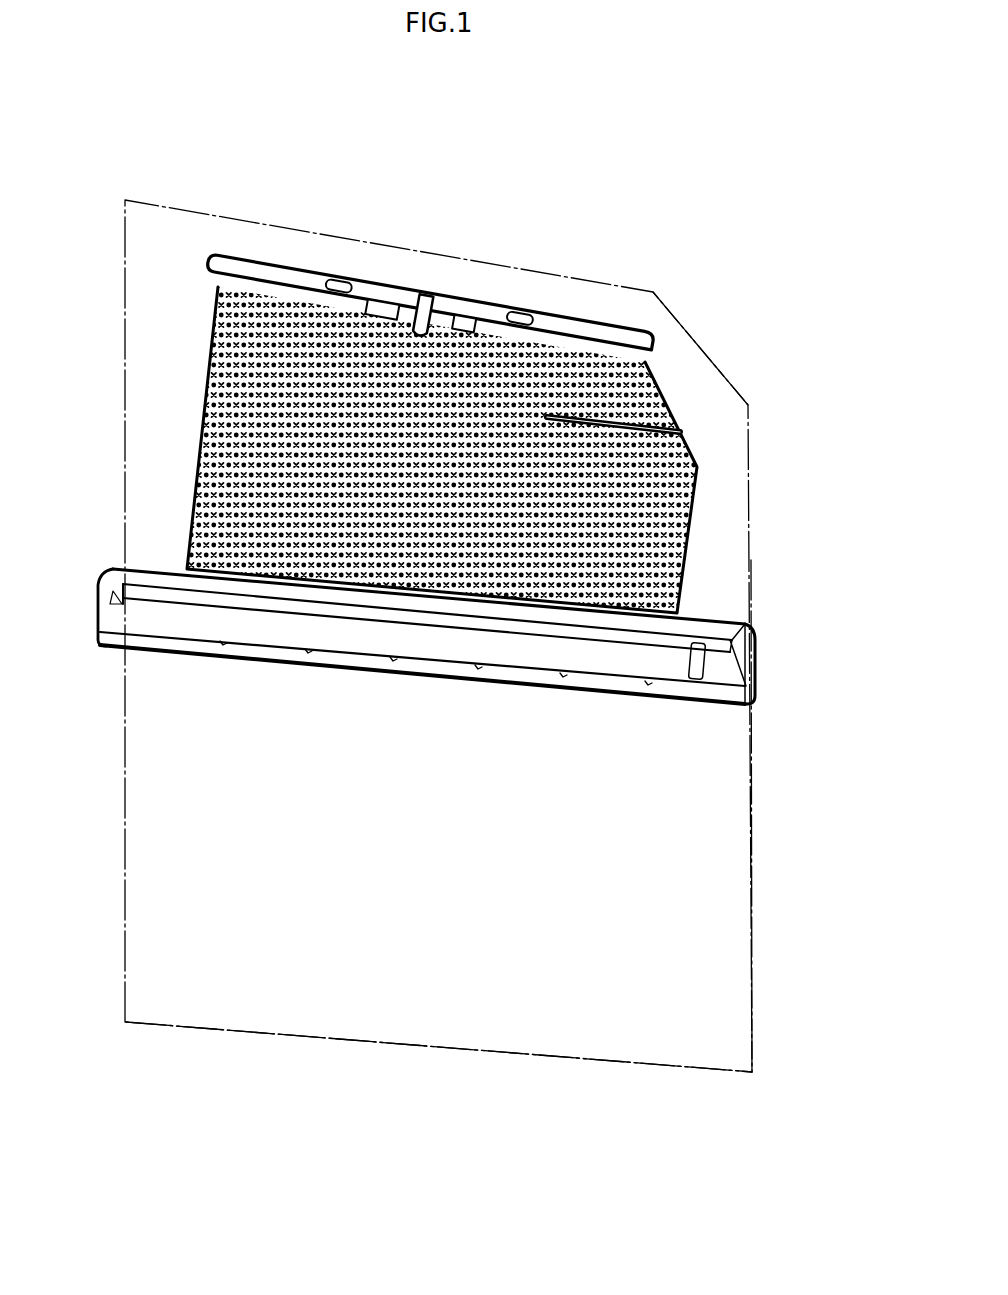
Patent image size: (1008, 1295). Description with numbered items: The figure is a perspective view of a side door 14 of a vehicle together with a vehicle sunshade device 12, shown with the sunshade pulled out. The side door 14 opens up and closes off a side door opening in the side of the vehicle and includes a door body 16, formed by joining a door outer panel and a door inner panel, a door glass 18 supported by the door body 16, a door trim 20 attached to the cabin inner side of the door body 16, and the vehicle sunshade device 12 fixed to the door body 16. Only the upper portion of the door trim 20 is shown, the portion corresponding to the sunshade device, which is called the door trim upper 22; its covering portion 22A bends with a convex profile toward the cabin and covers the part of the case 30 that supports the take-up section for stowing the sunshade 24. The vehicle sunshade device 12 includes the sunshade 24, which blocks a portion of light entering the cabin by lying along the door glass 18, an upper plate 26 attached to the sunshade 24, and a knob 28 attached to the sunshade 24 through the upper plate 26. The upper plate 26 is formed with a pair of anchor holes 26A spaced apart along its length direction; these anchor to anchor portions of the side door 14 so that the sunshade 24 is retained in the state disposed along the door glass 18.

The vehicle sunshade device 12 is at (728, 590).
The side door 14 is at (444, 1086).
The door body 16 is at (753, 866).
The door glass 18 is at (683, 320).
The door trim 20 is at (404, 448).
The door trim upper 22 is at (404, 608).
The covering portion 22A is at (362, 632).
The sunshade 24 is at (208, 356).
The upper plate 26 is at (273, 260).
The anchor holes 26A is at (347, 280).
The knob 28 is at (427, 298).
The case 30 is at (160, 566).